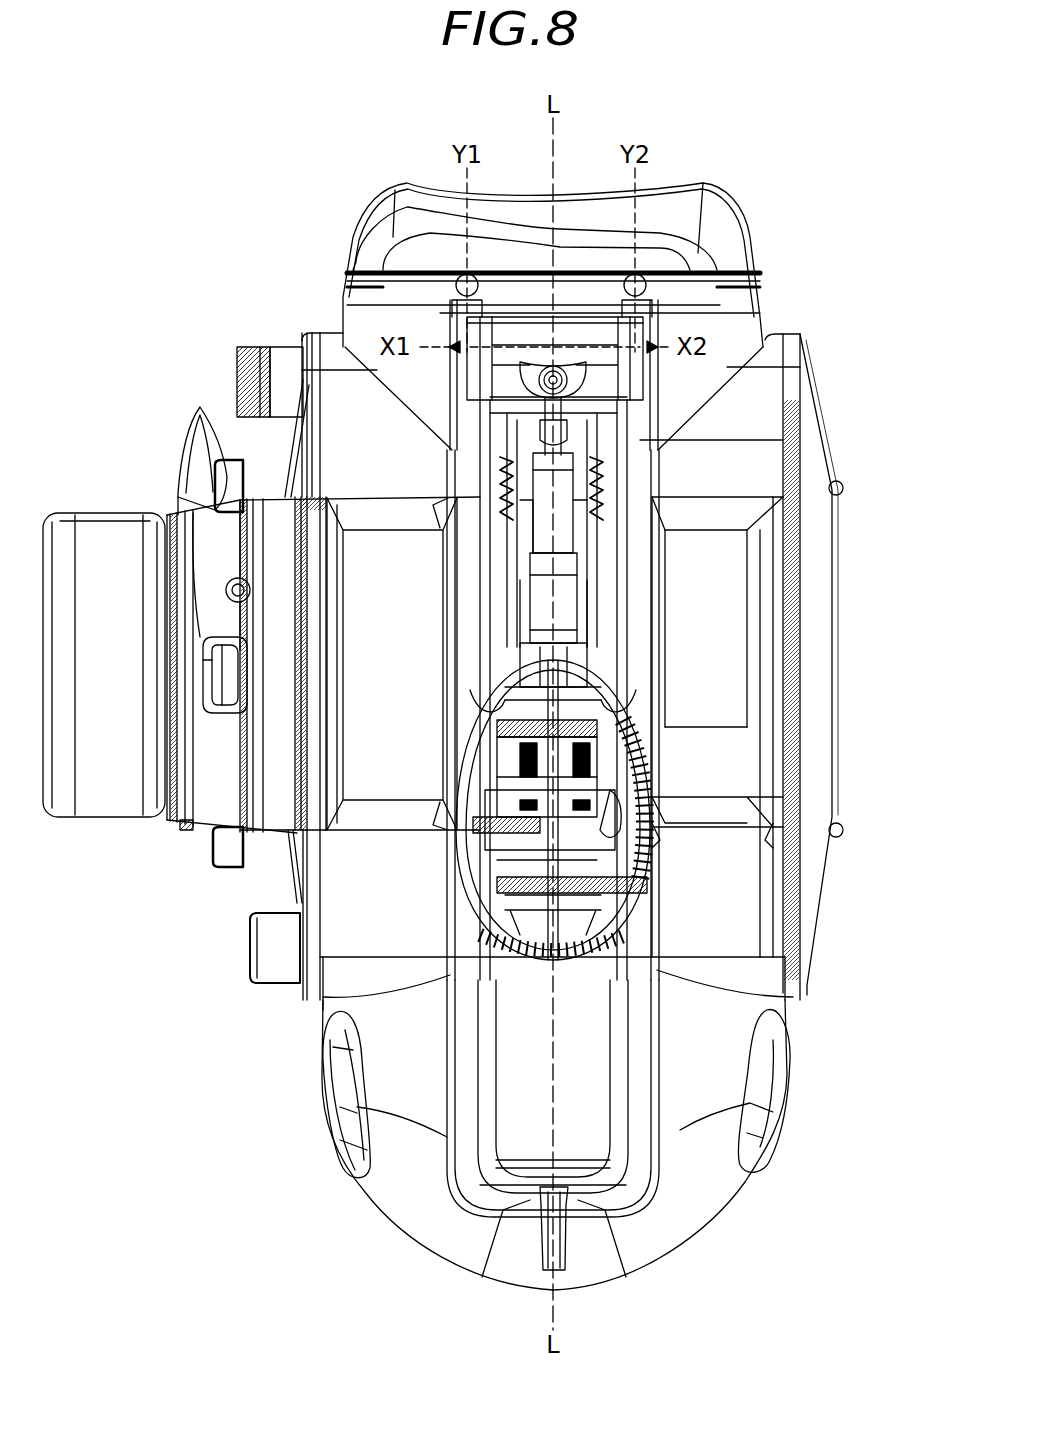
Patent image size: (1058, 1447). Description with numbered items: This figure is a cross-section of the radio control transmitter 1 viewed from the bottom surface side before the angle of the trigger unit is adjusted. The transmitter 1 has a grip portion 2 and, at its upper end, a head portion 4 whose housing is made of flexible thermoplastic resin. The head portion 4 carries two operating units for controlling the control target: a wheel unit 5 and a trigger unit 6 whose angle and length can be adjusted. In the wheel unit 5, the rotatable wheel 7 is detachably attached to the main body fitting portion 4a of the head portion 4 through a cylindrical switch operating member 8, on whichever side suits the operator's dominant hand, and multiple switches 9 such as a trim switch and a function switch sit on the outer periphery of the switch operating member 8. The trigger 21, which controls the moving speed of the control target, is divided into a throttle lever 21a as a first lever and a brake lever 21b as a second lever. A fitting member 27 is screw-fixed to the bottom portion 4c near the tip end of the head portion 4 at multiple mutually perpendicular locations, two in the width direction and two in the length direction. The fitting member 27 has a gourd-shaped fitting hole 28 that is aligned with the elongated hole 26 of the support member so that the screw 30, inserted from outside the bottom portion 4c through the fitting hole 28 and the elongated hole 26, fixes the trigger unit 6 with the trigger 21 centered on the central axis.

The transmitter 1 is at (145, 231).
The grip portion 2 is at (790, 793).
The head portion 4 is at (700, 328).
The main body fitting portion 4a is at (293, 803).
The bottom portion 4c is at (420, 313).
The wheel unit 5 is at (100, 918).
The trigger unit 6 is at (505, 582).
The wheel 7 is at (108, 800).
The switch operating member 8 is at (200, 802).
The switches 9 is at (180, 490).
The trigger 21 is at (903, 530).
The throttle lever 21a is at (565, 530).
The brake lever 21b is at (560, 605).
The elongated hole 26 is at (560, 430).
The fitting member 27 is at (610, 385).
The fitting hole 28 is at (512, 322).
The screw 30 is at (560, 363).